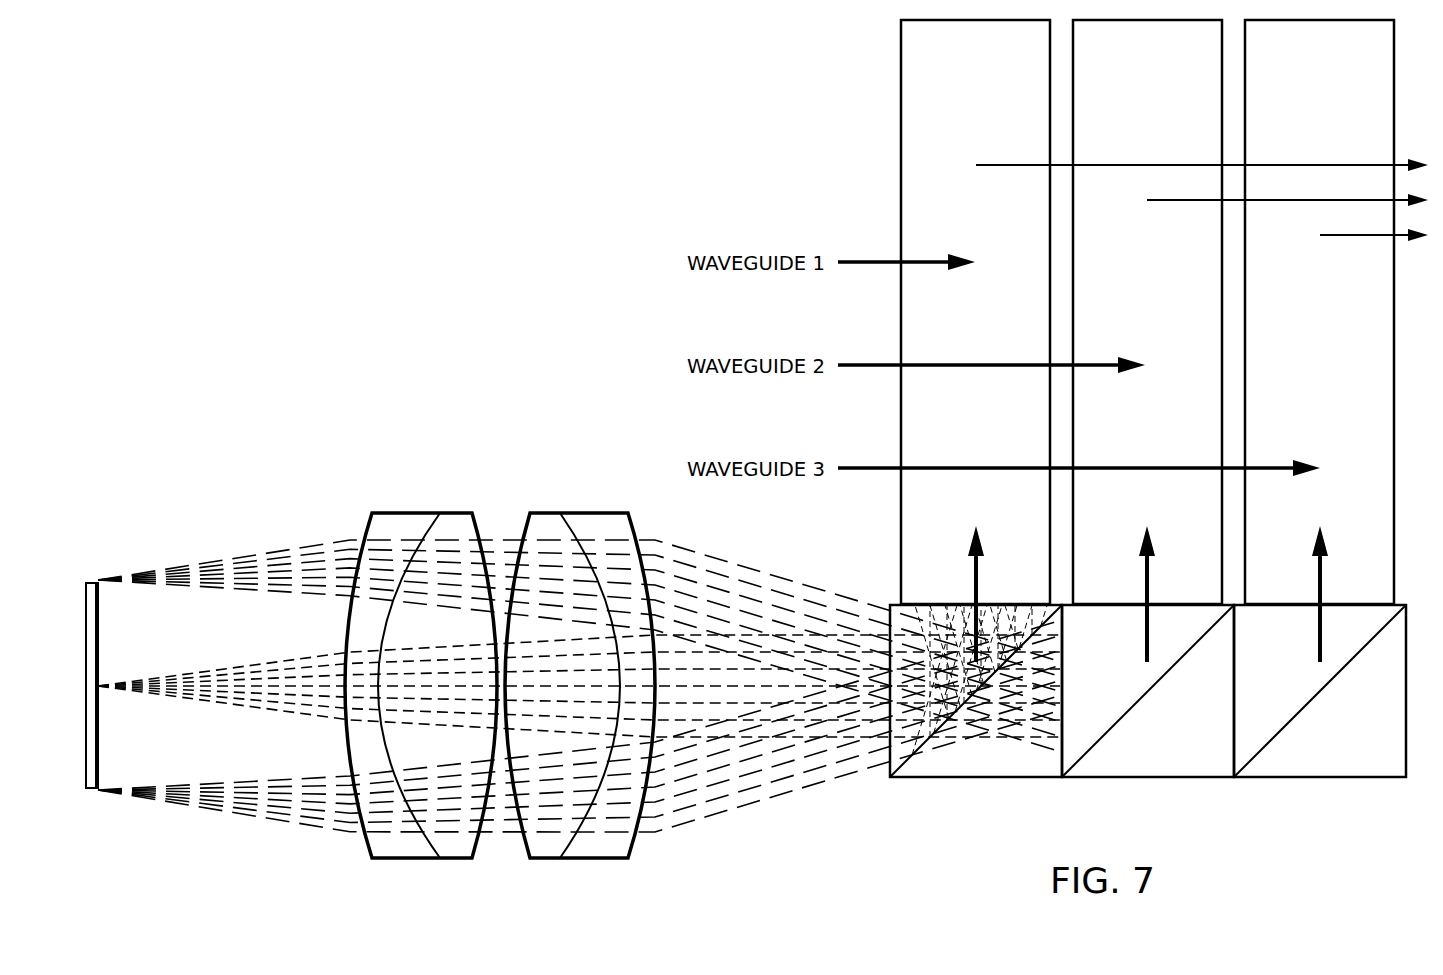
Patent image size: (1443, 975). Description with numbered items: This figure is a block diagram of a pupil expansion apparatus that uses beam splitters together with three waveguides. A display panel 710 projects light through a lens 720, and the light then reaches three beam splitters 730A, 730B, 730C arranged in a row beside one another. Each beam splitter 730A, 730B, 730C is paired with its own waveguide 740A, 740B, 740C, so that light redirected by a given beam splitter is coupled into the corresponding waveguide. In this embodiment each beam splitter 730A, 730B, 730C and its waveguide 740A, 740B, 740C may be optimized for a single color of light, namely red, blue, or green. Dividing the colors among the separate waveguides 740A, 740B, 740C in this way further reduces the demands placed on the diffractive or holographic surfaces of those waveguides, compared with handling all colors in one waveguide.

The display panel 710 is at (90, 583).
The lens 720 is at (500, 719).
The beam splitter 730A is at (978, 770).
The beam splitter 730B is at (1150, 770).
The beam splitter 730C is at (1322, 770).
The waveguide 740A is at (1005, 330).
The waveguide 740B is at (1168, 330).
The waveguide 740C is at (1350, 330).